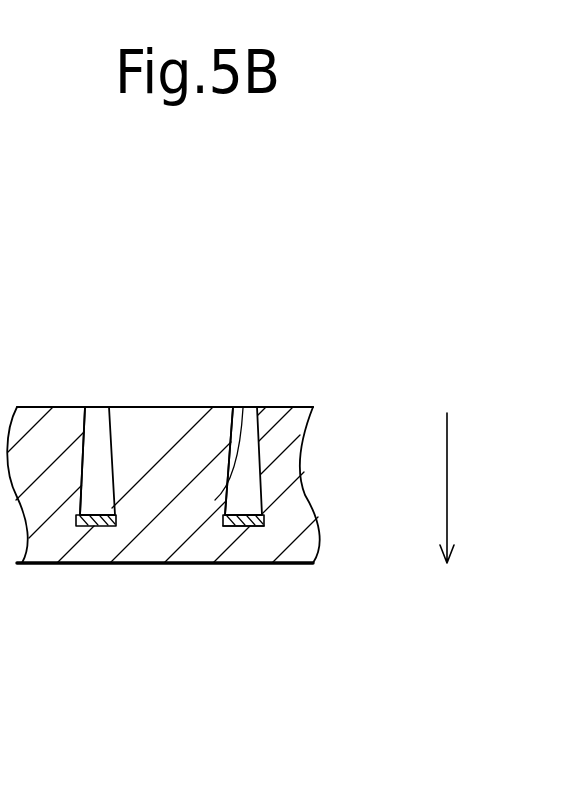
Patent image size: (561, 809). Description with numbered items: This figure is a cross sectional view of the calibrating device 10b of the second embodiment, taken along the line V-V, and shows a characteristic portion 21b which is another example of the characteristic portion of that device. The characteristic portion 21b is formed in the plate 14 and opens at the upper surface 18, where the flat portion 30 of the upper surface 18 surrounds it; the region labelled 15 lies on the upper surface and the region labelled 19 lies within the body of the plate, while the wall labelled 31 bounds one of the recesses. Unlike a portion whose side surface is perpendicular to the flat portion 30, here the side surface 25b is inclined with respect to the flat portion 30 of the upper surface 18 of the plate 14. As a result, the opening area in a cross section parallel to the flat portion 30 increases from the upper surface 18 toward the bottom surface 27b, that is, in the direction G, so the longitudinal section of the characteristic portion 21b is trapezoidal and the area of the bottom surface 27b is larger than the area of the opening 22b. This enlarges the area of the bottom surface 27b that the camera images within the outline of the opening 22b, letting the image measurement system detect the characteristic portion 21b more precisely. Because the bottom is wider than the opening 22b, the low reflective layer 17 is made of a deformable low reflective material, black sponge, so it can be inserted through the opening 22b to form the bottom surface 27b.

The calibrating device 10b is at (297, 247).
The plate 14 is at (320, 533).
The top surface of base material 15 is at (172, 407).
The low reflective layer 17 is at (263, 526).
The upper surface 18 is at (283, 407).
The base material 19 is at (58, 538).
The characteristic portion 21b is at (283, 667).
The opening 22b is at (222, 476).
The side surface 25b is at (215, 500).
The bottom surface 27b is at (240, 527).
The flat portion 30 is at (205, 407).
The groove side wall 31 is at (83, 447).
The direction G is at (461, 488).